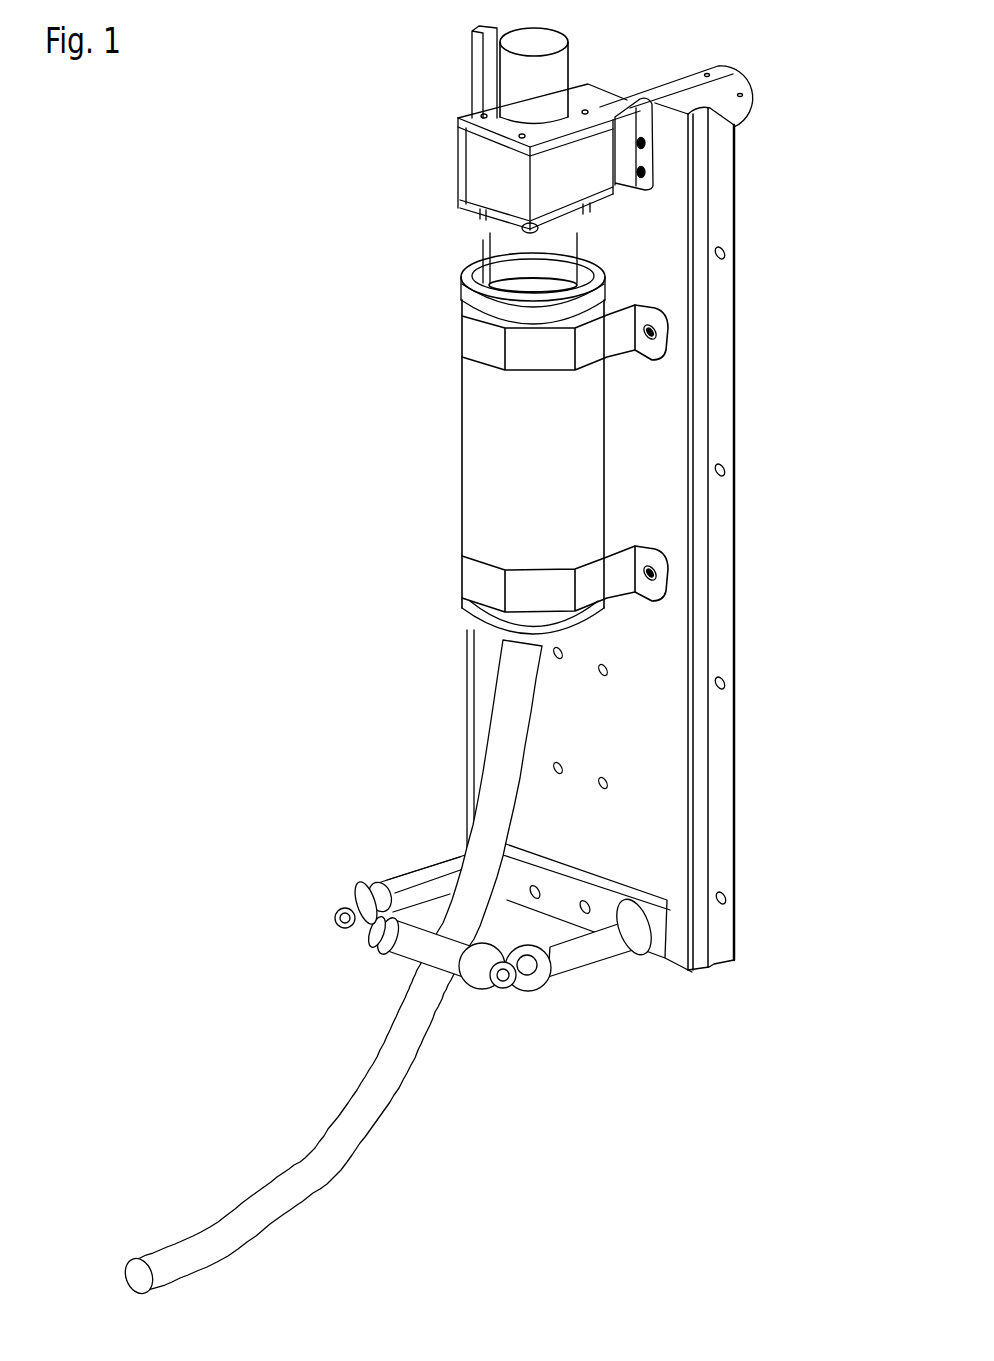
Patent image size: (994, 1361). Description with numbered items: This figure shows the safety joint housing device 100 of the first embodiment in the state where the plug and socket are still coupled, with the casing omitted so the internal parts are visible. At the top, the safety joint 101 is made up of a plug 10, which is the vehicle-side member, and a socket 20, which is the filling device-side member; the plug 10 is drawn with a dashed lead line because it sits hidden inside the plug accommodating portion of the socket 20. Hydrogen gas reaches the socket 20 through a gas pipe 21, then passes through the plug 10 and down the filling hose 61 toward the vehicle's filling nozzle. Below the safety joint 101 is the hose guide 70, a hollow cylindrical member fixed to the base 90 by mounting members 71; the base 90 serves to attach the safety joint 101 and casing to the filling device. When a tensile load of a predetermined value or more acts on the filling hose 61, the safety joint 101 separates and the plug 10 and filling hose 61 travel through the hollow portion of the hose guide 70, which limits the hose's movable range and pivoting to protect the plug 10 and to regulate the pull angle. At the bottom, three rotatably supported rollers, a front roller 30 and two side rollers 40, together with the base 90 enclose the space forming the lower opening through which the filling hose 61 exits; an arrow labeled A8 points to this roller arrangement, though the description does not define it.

The safety joint housing device 100 is at (428, 369).
The safety joint 101 is at (457, 178).
The plug 10 is at (480, 250).
The socket 20 is at (478, 190).
The gas pipe 21 is at (748, 90).
The front roller 30 is at (413, 952).
The side rollers 40 is at (423, 887).
The filling hose 61 is at (507, 748).
The hose guide 70 is at (493, 451).
The mounting member 71 is at (627, 306).
The base 90 is at (668, 412).
The roller guide assembly A8 is at (379, 962).